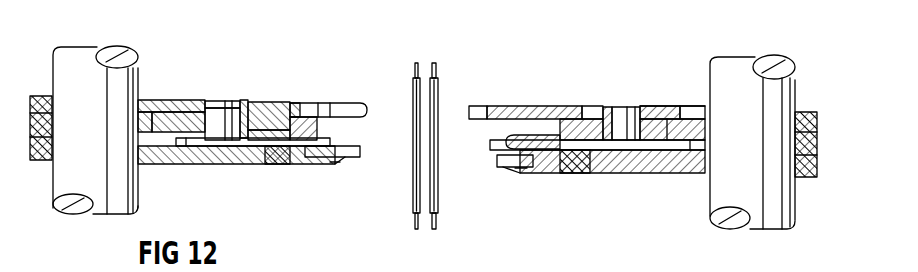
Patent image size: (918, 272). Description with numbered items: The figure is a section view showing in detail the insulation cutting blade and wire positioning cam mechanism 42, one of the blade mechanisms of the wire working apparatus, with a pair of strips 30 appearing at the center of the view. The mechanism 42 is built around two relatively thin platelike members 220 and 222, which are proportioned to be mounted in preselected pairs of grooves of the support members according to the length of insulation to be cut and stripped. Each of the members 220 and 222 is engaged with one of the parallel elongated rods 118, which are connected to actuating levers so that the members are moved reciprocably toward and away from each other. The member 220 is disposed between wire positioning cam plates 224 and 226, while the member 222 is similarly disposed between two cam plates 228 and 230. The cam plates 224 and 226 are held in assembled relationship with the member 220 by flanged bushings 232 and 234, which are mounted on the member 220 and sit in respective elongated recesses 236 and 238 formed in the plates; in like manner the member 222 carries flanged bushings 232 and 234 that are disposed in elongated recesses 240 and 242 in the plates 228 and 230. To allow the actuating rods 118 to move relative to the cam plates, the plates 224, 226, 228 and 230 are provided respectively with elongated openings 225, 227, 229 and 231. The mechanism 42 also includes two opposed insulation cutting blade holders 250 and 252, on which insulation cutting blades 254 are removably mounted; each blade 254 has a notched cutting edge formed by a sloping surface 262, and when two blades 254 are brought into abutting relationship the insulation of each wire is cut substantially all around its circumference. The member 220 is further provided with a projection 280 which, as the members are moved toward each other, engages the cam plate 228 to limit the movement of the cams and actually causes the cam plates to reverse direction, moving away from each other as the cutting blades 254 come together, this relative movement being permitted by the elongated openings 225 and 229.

The strips 30 is at (452, 222).
The blade mechanism 42 is at (584, 78).
The elongated rod 118 is at (102, 207).
The platelike member 220 is at (166, 110).
The platelike member 222 is at (676, 110).
The wire positioning cam plate 224 is at (176, 116).
The elongated opening 225 is at (149, 101).
The wire positioning cam plate 226 is at (158, 153).
The elongated opening 227 is at (130, 133).
The cam plate 228 is at (507, 108).
The elongated opening 229 is at (692, 112).
The cam plate 230 is at (513, 140).
The elongated opening 231 is at (707, 129).
The flanged bushing 232 is at (252, 103).
The flanged bushing 234 is at (222, 146).
The elongated recess 236 is at (281, 104).
The elongated recess 238 is at (266, 162).
The elongated recess 240 is at (567, 117).
The elongated recess 242 is at (573, 169).
The insulation cutting blade holder 250 is at (198, 160).
The insulation cutting blade holder 252 is at (642, 173).
The insulation cutting blade 254 is at (312, 158).
The sloping surface 262 is at (331, 162).
The projection 280 is at (330, 105).